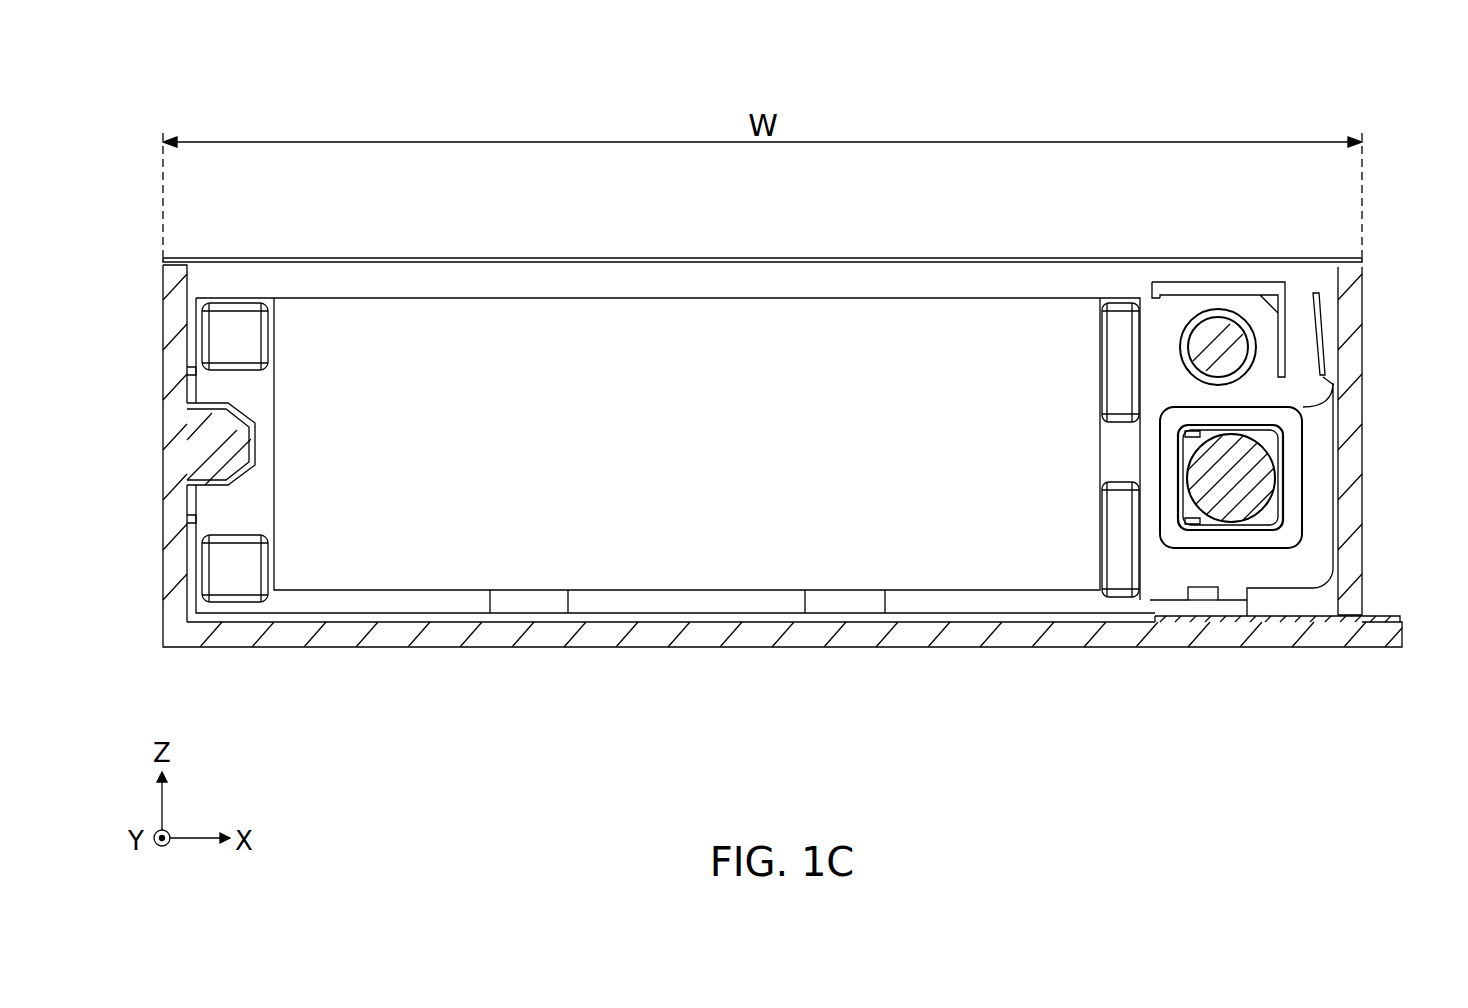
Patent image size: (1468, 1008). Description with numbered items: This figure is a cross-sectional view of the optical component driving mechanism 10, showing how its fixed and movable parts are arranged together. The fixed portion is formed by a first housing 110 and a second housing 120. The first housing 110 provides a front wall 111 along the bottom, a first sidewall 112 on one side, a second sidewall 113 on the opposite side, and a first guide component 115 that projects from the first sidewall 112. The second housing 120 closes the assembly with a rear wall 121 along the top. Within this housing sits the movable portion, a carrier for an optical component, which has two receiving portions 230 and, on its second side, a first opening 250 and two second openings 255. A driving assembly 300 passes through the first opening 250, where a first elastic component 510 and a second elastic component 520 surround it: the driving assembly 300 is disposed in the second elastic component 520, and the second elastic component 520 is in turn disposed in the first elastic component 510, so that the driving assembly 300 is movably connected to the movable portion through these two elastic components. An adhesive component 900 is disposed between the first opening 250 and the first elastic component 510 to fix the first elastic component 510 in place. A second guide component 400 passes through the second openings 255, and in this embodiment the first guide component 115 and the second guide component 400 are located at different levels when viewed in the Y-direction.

The optical component driving mechanism 10 is at (142, 83).
The first housing 110 is at (782, 508).
The front wall 111 is at (976, 640).
The first sidewall 112 is at (163, 567).
The second sidewall 113 is at (1354, 487).
The first guide component 115 is at (221, 455).
The second housing 120 is at (1030, 284).
The rear wall 121 is at (507, 258).
The receiving portion 230 is at (248, 439).
The first opening 250 is at (1303, 517).
The second opening 255 is at (1183, 326).
The driving assembly 300 is at (1255, 465).
The second guide component 400 is at (1228, 340).
The first elastic component 510 is at (1263, 540).
The second elastic component 520 is at (1200, 525).
The adhesive component 900 is at (1323, 382).